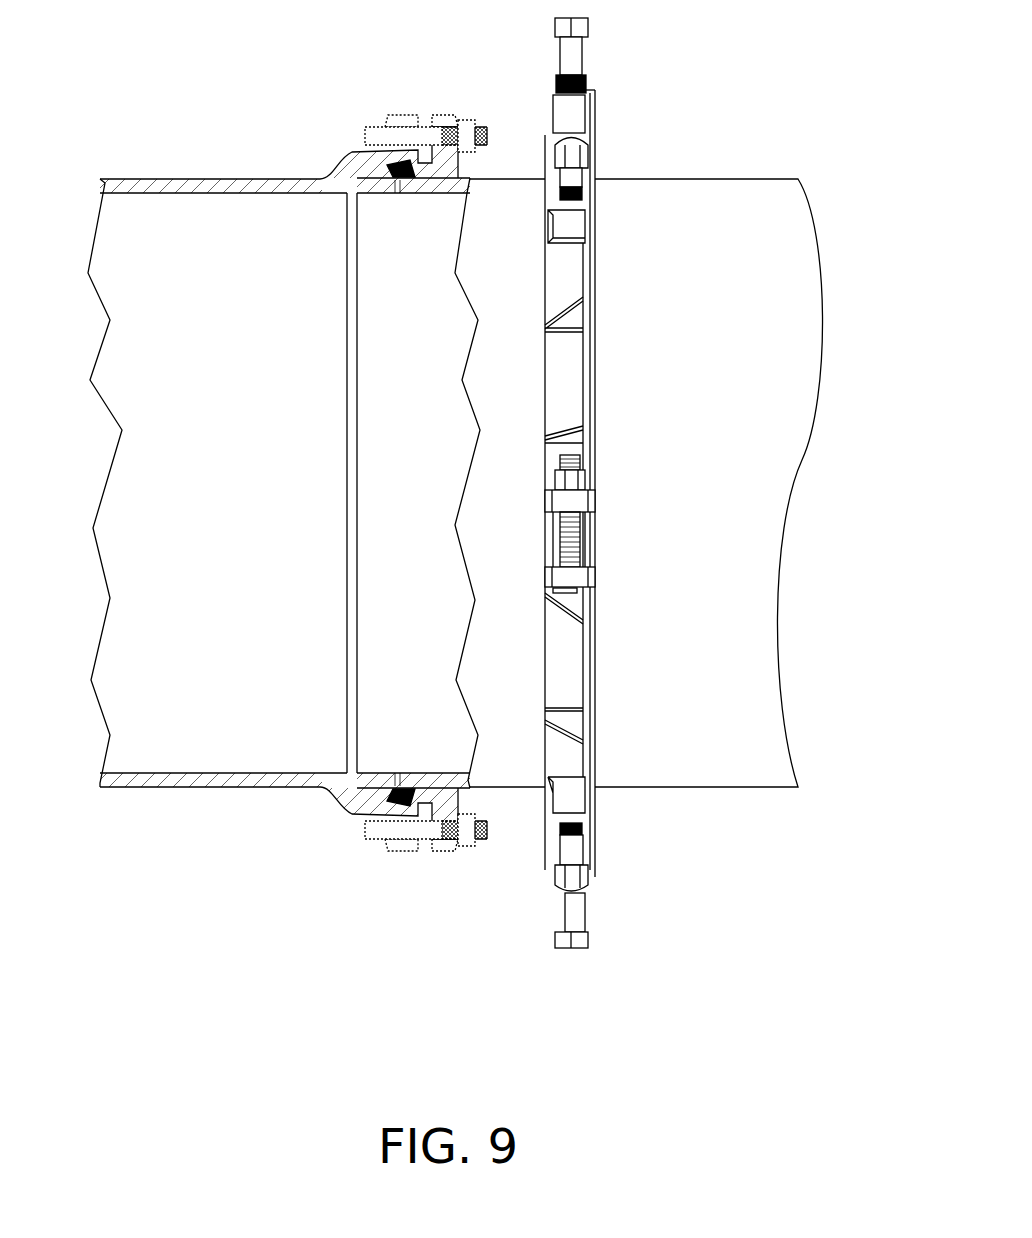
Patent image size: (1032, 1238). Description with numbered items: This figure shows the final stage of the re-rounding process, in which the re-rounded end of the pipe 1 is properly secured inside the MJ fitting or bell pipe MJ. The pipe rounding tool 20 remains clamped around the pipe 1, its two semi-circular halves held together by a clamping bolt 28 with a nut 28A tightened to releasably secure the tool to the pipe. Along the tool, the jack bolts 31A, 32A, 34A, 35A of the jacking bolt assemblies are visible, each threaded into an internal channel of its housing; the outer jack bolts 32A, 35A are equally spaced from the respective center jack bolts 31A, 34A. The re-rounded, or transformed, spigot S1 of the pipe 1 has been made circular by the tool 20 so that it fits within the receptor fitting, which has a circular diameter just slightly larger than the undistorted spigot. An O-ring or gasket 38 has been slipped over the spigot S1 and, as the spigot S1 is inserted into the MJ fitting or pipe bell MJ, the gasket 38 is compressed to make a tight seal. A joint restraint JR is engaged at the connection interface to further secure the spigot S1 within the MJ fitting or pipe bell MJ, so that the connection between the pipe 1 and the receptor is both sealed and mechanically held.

The pipe 1 is at (752, 253).
The pipe rounding tool 20 is at (604, 371).
The clamping bolt 28 is at (582, 521).
The nut 28A is at (580, 480).
The jack bolt 31A is at (575, 53).
The jack bolt 32A is at (580, 173).
The jack bolt 34A is at (575, 913).
The jack bolt 35A is at (573, 855).
The O-ring or gasket 38 is at (398, 192).
The re-rounded spigot S1 is at (418, 197).
The joint restraint JR is at (420, 110).
The mechanical joint fitting MJ is at (344, 177).